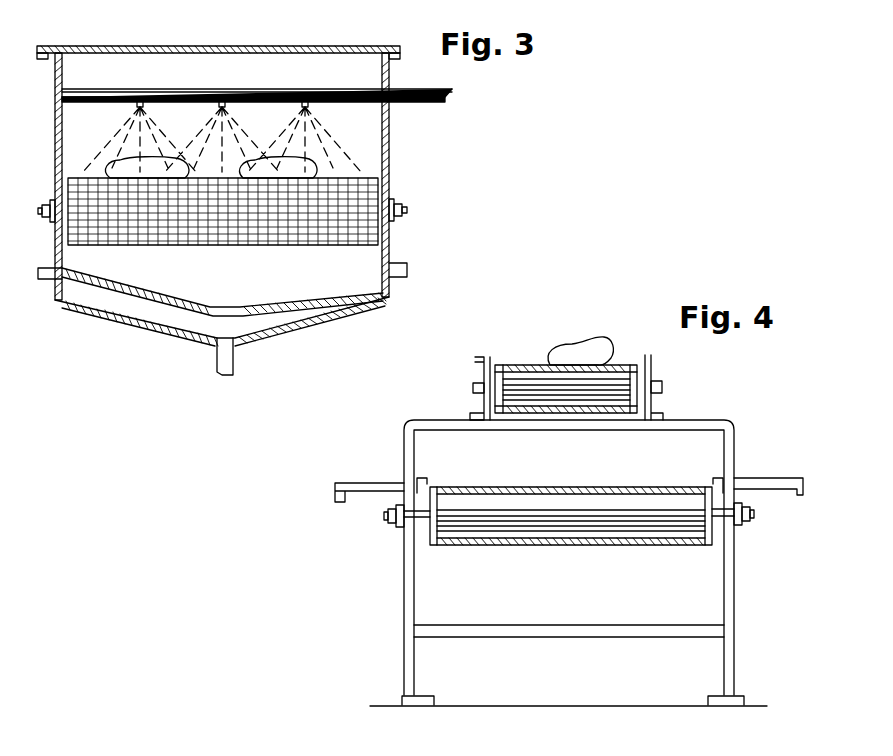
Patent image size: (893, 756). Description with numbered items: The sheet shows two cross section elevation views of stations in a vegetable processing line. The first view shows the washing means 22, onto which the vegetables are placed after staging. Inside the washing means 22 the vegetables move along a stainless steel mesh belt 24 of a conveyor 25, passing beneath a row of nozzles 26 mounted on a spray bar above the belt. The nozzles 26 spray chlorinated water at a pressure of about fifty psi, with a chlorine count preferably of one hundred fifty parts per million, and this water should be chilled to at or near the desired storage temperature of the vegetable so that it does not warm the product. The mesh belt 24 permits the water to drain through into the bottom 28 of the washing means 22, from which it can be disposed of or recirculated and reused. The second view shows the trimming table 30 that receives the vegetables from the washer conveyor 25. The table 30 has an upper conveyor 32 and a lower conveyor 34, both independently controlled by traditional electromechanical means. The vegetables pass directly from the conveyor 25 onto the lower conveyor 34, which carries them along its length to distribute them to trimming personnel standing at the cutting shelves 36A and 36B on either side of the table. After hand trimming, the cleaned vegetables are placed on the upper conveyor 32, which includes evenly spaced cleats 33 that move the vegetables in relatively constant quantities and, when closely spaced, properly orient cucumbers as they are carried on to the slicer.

In FIG. 3, the washing means 22 is at (165, 47).
In FIG. 3, the stainless steel mesh belt 24 is at (360, 195).
In FIG. 3, the conveyor 25 is at (405, 204).
In FIG. 3, the nozzles 26 is at (306, 101).
In FIG. 3, the bottom 28 is at (137, 325).
In FIG. 4, the trimming table 30 is at (373, 539).
In FIG. 4, the upper conveyor 32 is at (625, 383).
In FIG. 4, the cleats 33 is at (510, 364).
In FIG. 4, the lower conveyor 34 is at (691, 511).
In FIG. 4, the cutting shelf 36A is at (381, 452).
In FIG. 4, the cutting shelf 36B is at (760, 478).